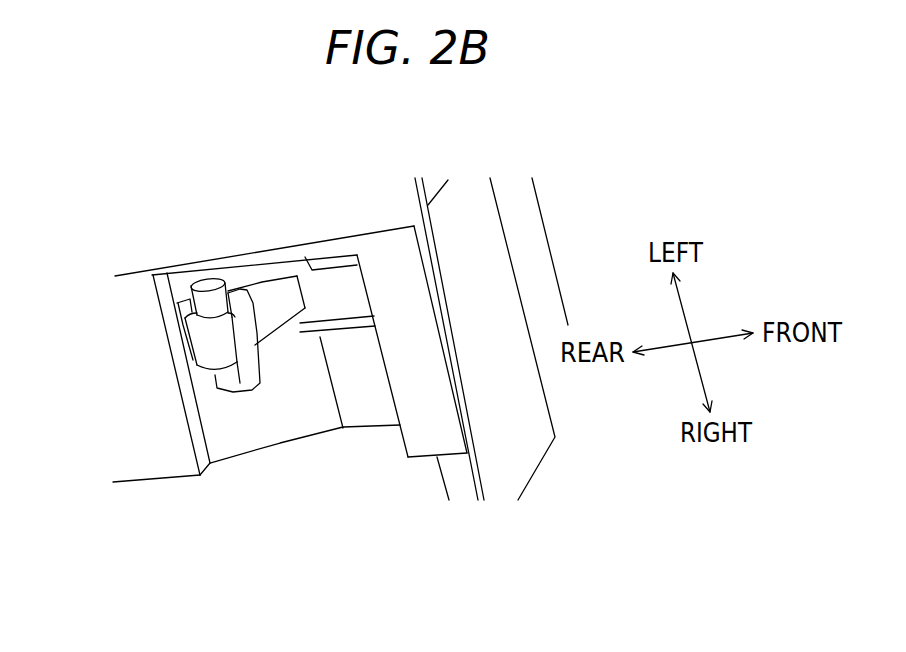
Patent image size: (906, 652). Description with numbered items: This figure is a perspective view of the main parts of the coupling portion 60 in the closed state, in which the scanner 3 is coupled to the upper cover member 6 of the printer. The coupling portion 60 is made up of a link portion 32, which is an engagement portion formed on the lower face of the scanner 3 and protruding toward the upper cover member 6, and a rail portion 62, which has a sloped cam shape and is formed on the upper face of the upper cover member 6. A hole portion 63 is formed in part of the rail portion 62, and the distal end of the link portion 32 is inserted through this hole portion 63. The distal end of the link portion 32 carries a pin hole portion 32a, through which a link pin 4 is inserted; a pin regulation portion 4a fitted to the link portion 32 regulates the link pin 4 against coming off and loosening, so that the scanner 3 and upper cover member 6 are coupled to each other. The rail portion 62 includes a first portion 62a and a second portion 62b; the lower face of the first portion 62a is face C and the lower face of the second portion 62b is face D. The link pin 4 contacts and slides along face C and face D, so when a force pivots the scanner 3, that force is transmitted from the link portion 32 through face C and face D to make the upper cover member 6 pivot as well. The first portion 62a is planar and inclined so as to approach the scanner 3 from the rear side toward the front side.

The scanner 3 is at (150, 226).
The link pin 4 is at (212, 300).
The pin regulation portion 4a is at (248, 380).
The upper cover member 6 is at (160, 443).
The link portion 32 is at (213, 350).
The pin hole portion 32a is at (213, 332).
The coupling portion 60 is at (318, 503).
The rail portion 62 is at (258, 270).
The first portion 62a is at (238, 442).
The second portion 62b is at (377, 415).
The hole portion 63 is at (345, 298).
The face C is at (230, 278).
The face D is at (338, 268).